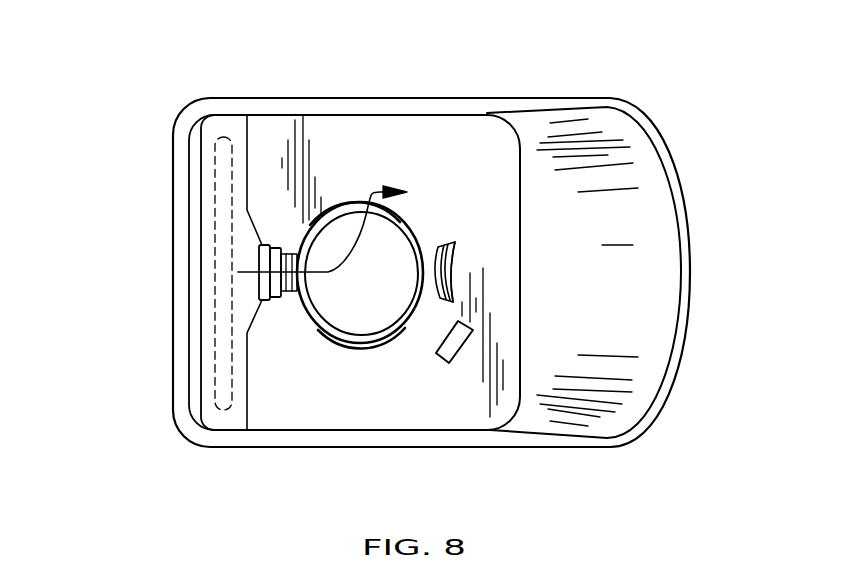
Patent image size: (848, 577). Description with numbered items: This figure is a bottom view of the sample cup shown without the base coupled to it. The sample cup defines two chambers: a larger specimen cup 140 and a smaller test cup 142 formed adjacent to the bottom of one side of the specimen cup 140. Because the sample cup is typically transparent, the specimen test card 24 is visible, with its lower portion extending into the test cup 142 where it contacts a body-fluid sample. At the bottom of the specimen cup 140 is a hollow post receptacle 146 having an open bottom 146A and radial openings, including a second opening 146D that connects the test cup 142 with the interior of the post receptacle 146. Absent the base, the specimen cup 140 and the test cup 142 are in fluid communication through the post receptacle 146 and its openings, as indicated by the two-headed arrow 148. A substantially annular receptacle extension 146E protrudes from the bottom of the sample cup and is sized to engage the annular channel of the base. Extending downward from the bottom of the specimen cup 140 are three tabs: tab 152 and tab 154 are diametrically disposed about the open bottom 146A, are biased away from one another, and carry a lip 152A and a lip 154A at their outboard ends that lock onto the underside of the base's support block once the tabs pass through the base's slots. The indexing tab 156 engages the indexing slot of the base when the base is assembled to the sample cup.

The specimen test card 24 is at (222, 193).
The specimen cup 140 is at (652, 198).
The test cup 142 is at (217, 125).
The post receptacle 146 is at (313, 318).
The open bottom 146A is at (372, 308).
The second opening 146D is at (333, 202).
The receptacle extension 146E is at (347, 338).
The two-headed arrow 148 is at (362, 240).
The tab 152 is at (262, 283).
The lip 152A is at (258, 260).
The tab 154 is at (440, 300).
The lip 154A is at (460, 263).
The indexing tab 156 is at (458, 347).